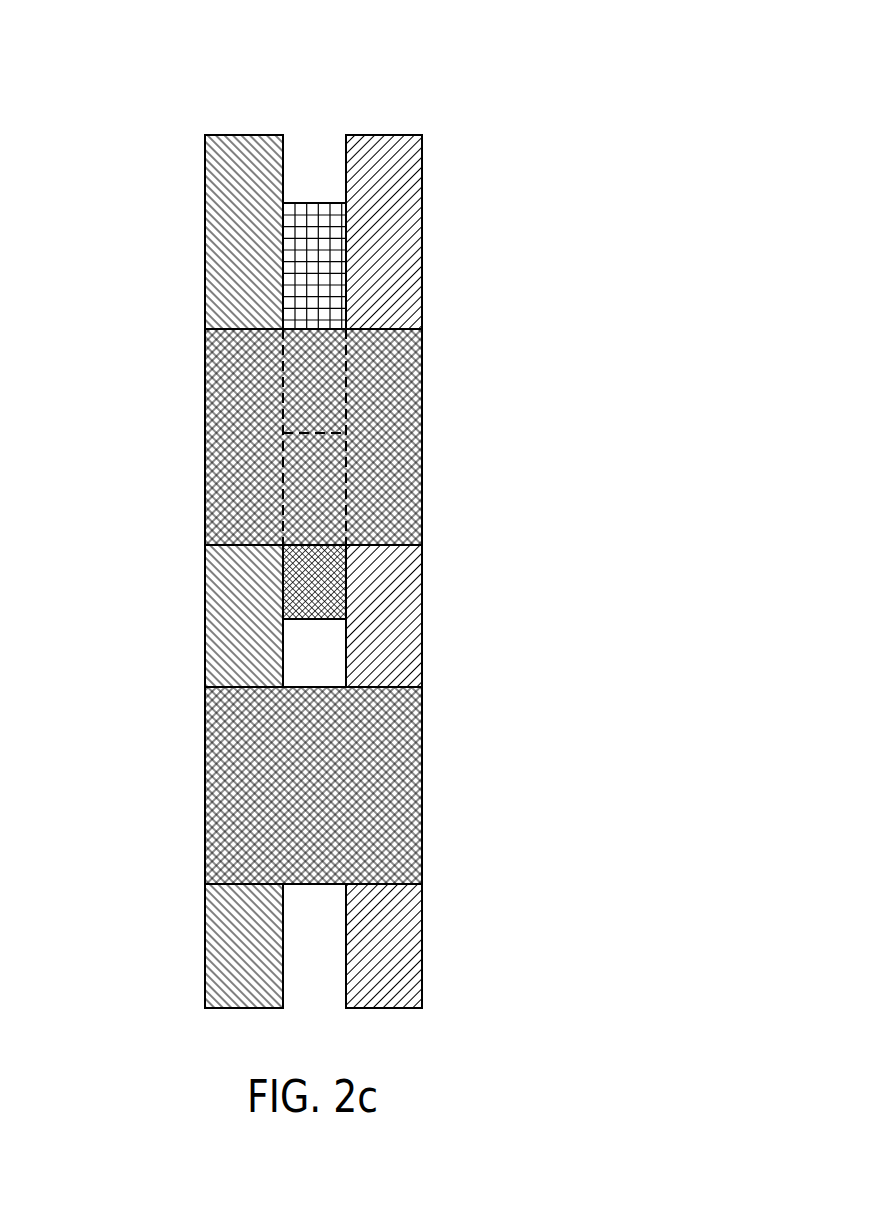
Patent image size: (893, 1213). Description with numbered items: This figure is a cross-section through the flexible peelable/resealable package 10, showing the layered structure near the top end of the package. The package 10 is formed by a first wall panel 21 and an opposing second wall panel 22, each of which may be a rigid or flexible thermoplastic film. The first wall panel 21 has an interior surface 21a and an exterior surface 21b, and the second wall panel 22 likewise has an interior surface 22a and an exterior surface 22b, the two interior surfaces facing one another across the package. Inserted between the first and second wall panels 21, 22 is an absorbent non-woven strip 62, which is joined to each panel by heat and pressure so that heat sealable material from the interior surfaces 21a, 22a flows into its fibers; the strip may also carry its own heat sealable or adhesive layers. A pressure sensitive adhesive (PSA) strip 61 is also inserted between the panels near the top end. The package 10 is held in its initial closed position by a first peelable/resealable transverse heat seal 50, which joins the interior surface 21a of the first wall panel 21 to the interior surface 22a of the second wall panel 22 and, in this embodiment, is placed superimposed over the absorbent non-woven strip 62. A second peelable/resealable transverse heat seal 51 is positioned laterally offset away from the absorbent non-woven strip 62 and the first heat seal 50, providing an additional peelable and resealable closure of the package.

The flexible peelable/resealable package 10 is at (311, 110).
The first wall panel 21 is at (307, 571).
The interior surface of the first wall panel 21a is at (283, 179).
The exterior surface of the first wall panel 21b is at (207, 678).
The second wall panel 22 is at (320, 571).
The interior surface of the second wall panel 22a is at (345, 960).
The exterior surface of the second wall panel 22b is at (423, 273).
The first peelable/resealable transverse heat seal 50 is at (398, 430).
The second peelable/resealable transverse heat seal 51 is at (400, 803).
The pressure sensitive adhesive (PSA) strip 61 is at (307, 303).
The absorbent non-woven strip 62 is at (298, 578).